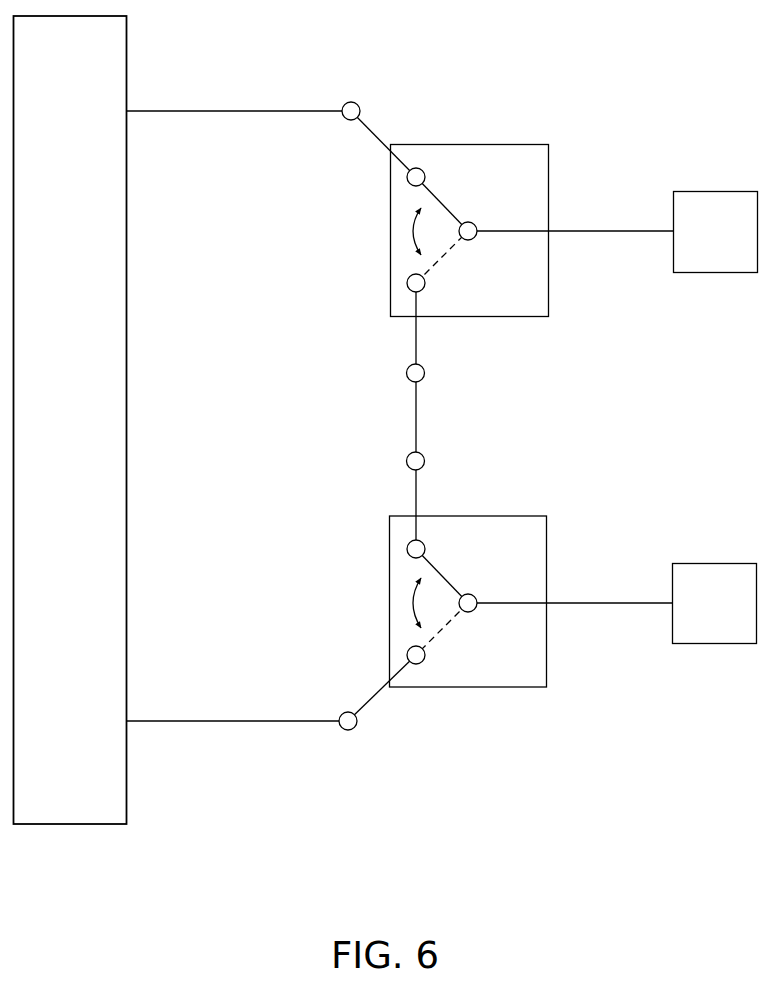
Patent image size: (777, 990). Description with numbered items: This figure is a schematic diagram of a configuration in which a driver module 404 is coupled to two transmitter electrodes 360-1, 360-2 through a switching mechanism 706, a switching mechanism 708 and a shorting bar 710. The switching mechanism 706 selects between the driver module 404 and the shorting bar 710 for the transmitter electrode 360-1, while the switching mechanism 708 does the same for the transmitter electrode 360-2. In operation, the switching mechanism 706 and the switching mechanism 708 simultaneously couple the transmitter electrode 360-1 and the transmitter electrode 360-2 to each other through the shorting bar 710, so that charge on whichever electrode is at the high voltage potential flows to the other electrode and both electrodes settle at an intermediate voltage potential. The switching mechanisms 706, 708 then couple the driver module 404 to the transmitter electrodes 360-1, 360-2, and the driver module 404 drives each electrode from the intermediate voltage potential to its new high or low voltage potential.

The driver module 404 is at (46, 450).
The switching mechanism 706 is at (463, 317).
The switching mechanism 708 is at (463, 687).
The shorting bar 710 is at (416, 414).
The transmitter electrode 360-1 is at (684, 246).
The transmitter electrode 360-2 is at (683, 618).